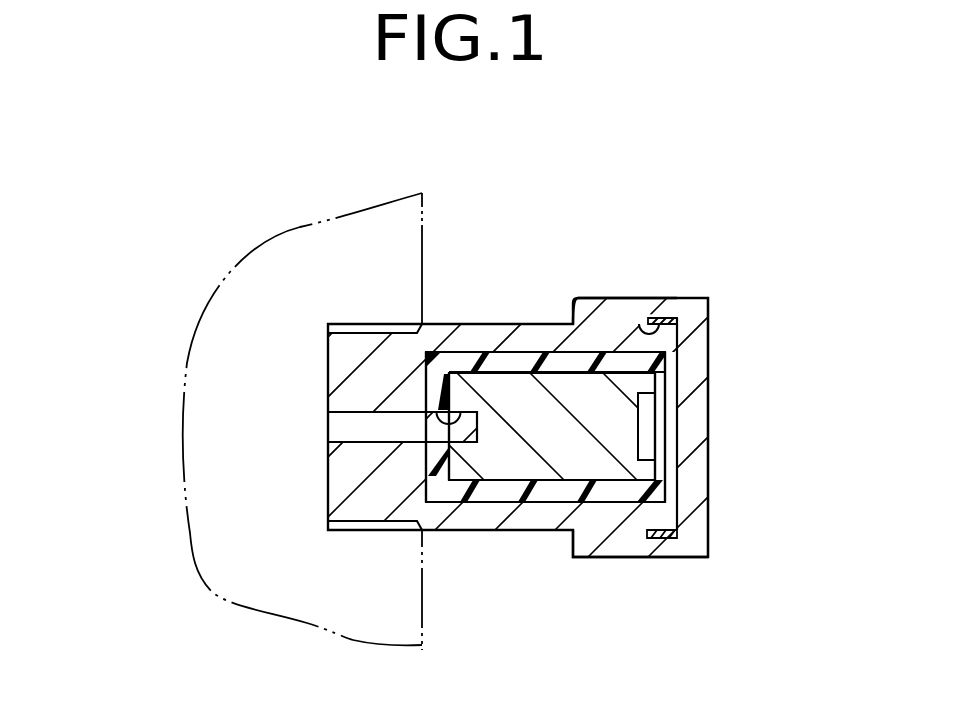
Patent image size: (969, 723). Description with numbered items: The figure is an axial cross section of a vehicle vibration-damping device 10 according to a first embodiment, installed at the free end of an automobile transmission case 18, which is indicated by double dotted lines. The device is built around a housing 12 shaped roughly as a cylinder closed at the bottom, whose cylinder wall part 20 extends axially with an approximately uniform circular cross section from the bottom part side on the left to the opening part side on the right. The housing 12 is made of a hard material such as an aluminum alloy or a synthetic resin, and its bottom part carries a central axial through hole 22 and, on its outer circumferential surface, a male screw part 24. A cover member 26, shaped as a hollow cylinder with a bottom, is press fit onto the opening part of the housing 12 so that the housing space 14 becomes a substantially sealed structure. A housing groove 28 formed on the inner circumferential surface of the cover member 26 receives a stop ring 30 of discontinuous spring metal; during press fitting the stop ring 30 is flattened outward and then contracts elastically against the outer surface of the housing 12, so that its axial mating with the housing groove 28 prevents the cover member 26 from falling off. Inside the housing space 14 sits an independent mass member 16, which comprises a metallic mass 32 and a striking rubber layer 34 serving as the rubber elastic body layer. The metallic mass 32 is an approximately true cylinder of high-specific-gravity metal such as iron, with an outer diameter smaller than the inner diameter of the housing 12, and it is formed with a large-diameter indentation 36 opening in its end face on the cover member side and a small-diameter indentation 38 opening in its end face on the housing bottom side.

The vibration-damping device 10 is at (749, 227).
The housing 12 is at (504, 297).
The housing space 14 is at (670, 403).
The independent mass member 16 is at (543, 506).
The automobile transmission case 18 is at (231, 442).
The cylinder wall part 20 is at (547, 340).
The through hole 22 is at (403, 434).
The male screw part 24 is at (379, 323).
The cover member 26 is at (598, 311).
The housing groove 28 is at (639, 326).
The stop ring 30 is at (655, 538).
The metallic mass 32 is at (552, 432).
The striking rubber layer 34 is at (480, 490).
The large-diameter indentation 36 is at (645, 455).
The small-diameter indentation 38 is at (436, 410).